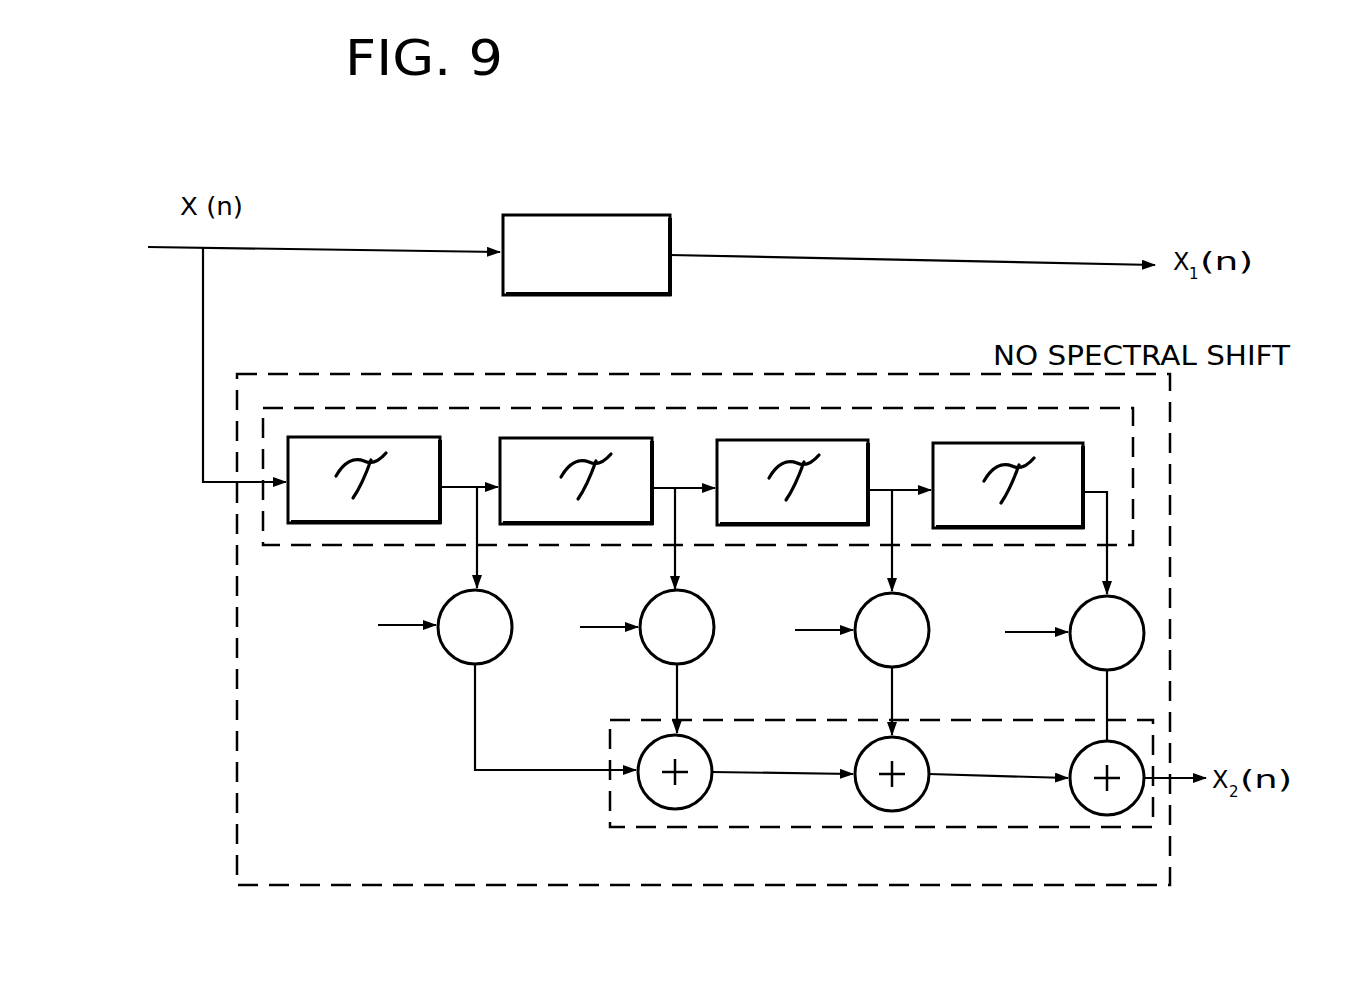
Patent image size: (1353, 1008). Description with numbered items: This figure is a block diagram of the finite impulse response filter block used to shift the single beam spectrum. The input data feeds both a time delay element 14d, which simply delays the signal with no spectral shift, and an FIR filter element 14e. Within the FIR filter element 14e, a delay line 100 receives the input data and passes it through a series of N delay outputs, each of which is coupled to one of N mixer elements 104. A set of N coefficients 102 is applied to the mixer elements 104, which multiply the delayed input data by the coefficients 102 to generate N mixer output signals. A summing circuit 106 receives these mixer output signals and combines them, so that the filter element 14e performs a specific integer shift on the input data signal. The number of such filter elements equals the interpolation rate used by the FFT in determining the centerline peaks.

The time delay element 14d is at (606, 215).
The FIR filter element 14e is at (775, 375).
The delay line 100 is at (383, 541).
The coefficients 102 is at (365, 655).
The mixer elements 104 is at (502, 601).
The summing circuit 106 is at (605, 805).